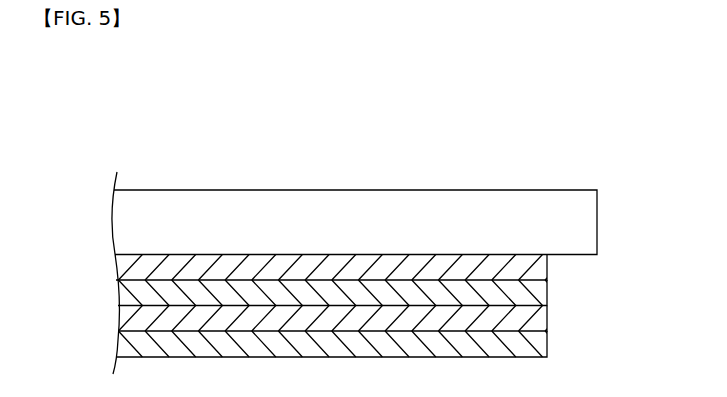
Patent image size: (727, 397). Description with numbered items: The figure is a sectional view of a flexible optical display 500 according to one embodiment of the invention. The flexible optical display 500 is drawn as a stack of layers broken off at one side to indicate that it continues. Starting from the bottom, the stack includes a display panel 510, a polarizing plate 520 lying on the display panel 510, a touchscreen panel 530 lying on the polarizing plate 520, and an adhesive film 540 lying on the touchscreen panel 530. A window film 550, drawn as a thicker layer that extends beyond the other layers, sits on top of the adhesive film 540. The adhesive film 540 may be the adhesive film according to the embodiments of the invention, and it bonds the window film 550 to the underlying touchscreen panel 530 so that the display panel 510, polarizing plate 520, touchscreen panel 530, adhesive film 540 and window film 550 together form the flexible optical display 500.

The flexible optical display 500 is at (562, 148).
The display panel 510 is at (548, 344).
The polarizing plate 520 is at (548, 323).
The touchscreen panel 530 is at (548, 297).
The adhesive film 540 is at (548, 270).
The window film 550 is at (580, 225).